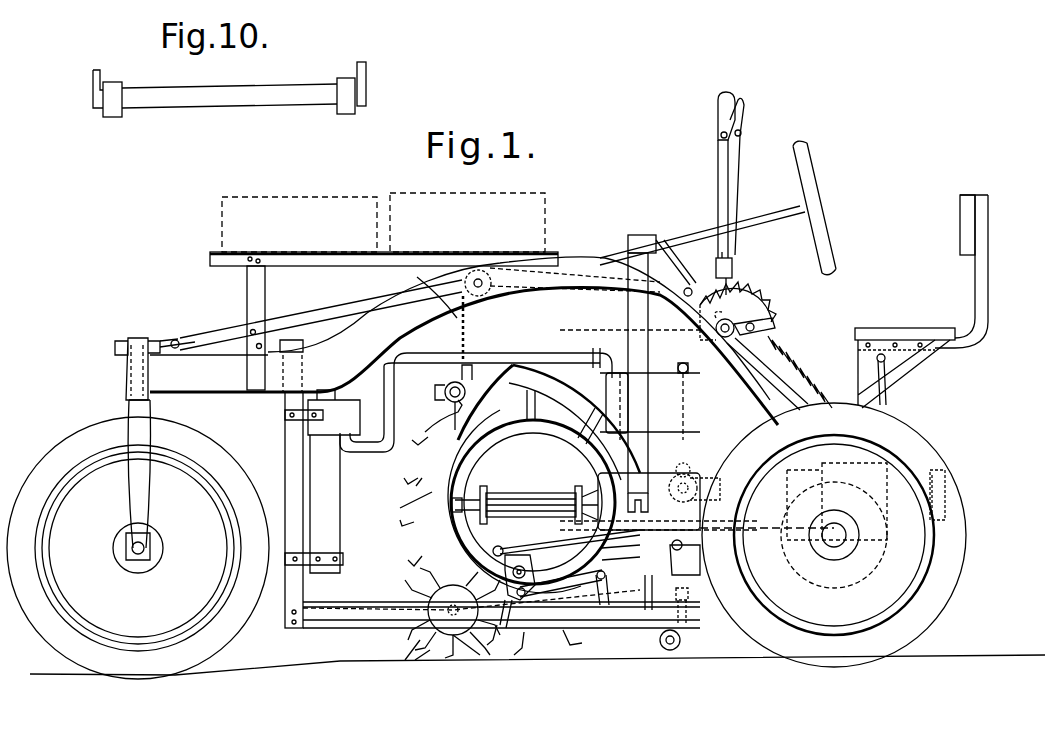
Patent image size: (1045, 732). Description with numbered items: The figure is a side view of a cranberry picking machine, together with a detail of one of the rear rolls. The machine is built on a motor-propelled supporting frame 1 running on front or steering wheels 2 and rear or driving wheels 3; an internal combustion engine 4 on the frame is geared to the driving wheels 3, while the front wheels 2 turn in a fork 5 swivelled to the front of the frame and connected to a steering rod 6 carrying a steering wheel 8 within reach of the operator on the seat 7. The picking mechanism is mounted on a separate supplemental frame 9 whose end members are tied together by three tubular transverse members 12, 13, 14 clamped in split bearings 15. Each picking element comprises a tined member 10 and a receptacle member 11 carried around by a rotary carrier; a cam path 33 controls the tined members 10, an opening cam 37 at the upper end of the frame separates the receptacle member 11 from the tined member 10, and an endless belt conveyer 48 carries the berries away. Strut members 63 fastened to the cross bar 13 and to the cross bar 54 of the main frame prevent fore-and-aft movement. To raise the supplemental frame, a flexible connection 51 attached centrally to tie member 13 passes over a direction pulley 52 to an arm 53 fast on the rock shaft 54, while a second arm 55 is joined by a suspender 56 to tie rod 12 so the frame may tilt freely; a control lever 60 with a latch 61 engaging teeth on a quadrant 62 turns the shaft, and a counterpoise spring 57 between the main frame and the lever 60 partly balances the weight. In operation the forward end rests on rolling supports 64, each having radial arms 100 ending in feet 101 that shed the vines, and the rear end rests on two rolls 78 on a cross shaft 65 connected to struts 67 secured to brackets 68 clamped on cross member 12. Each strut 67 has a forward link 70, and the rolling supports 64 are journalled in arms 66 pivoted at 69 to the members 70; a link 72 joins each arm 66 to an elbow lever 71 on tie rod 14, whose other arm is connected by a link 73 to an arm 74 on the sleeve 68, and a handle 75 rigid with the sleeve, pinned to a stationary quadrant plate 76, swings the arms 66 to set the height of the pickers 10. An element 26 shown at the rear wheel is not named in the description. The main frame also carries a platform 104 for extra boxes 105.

In FIG. 1, the supporting frame 1 is at (395, 315).
In FIG. 1, the front or steering wheels 2 is at (42, 478).
In FIG. 1, the rear or driving wheels 3 is at (953, 573).
In FIG. 1, the internal combustion engine 4 is at (618, 420).
In FIG. 1, the fork 5 is at (128, 412).
In FIG. 1, the steering rod 6 is at (232, 340).
In FIG. 1, the seat 7 is at (916, 332).
In FIG. 1, the steering wheel 8 is at (808, 155).
In FIG. 1, the supplemental frame 9 is at (470, 452).
In FIG. 1, the tined picking member 10 is at (410, 485).
In FIG. 1, the receptacle member 11 is at (648, 612).
In FIG. 1, the transverse member 12 is at (745, 509).
In FIG. 1, the transverse member 13 is at (449, 388).
In FIG. 1, the transverse member 14 is at (510, 592).
In FIG. 1, the split bearings 15 is at (452, 410).
In FIG. 1, the brake 26 is at (935, 492).
In FIG. 1, the cam mechanism 33 is at (430, 497).
In FIG. 1, the opening cam 37 is at (576, 360).
In FIG. 1, the conveyer 48 is at (546, 497).
In FIG. 1, the flexible connection 51 is at (423, 293).
In FIG. 1, the direction pulley 52 is at (477, 270).
In FIG. 1, the arm 53 is at (692, 292).
In FIG. 1, the rock shaft 54 is at (760, 318).
In FIG. 1, the arm 55 is at (680, 366).
In FIG. 1, the suspender 56 is at (680, 420).
In FIG. 1, the counterpoise spring 57 is at (800, 372).
In FIG. 1, the control lever 60 is at (718, 180).
In FIG. 1, the latch 61 is at (733, 264).
In FIG. 1, the quadrant 62 is at (748, 293).
In FIG. 1, the strut members 63 is at (566, 348).
In FIG. 1, the rolling supports 64 is at (430, 652).
In FIG. 10, the cross shaft 65 is at (140, 94).
In FIG. 1, the cross shaft 65 is at (670, 650).
In FIG. 1, the arms 66 is at (556, 585).
In FIG. 10, the struts 67 is at (96, 72).
In FIG. 1, the struts 67 is at (700, 600).
In FIG. 1, the brackets 68 is at (660, 520).
In FIG. 1, the pivot 69 is at (603, 580).
In FIG. 1, the link 70 is at (625, 605).
In FIG. 1, the elbow lever 71 is at (500, 562).
In FIG. 1, the link 72 is at (535, 592).
In FIG. 1, the link 73 is at (552, 546).
In FIG. 1, the arm 74 is at (690, 545).
In FIG. 1, the handle 75 is at (740, 462).
In FIG. 1, the stationary quadrant plate 76 is at (698, 476).
In FIG. 10, the rolls 78 is at (104, 100).
In FIG. 1, the radial arms 100 is at (428, 640).
In FIG. 1, the foot 101 is at (476, 655).
In FIG. 1, the platform 104 is at (210, 258).
In FIG. 1, the extra boxes 105 is at (280, 197).